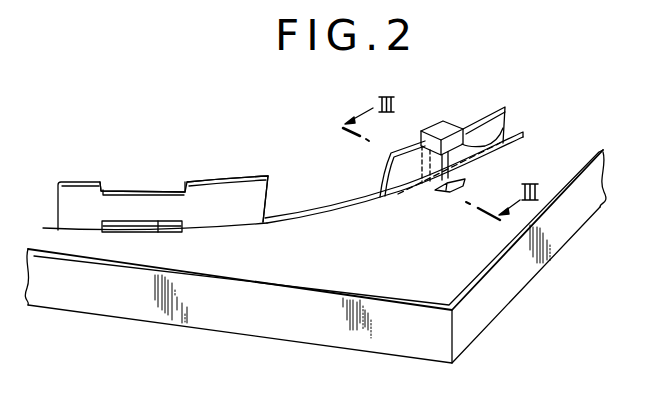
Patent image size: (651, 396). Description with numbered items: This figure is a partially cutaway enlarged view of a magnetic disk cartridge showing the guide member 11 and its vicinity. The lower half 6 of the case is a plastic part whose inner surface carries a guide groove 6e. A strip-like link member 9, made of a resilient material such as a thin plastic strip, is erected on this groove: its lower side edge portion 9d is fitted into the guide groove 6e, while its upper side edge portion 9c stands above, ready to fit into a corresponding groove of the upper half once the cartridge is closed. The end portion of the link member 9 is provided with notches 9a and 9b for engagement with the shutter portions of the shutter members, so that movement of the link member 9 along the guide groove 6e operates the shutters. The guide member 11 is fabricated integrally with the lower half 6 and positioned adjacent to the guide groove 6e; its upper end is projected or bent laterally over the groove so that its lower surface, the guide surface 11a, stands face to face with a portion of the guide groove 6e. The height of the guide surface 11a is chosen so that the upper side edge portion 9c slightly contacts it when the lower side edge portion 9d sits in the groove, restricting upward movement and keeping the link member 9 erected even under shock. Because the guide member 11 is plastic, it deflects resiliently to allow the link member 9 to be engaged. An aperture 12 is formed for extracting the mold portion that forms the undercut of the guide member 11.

The lower half 6 is at (484, 331).
The guide groove 6e is at (334, 211).
The link member 9 is at (184, 188).
The notch 9a is at (155, 190).
The notch 9b is at (160, 232).
The upper side edge portion 9c is at (233, 181).
The lower side edge portion 9d is at (258, 222).
The guide member 11 is at (472, 154).
The guide surface 11a is at (503, 124).
The aperture 12 is at (443, 192).